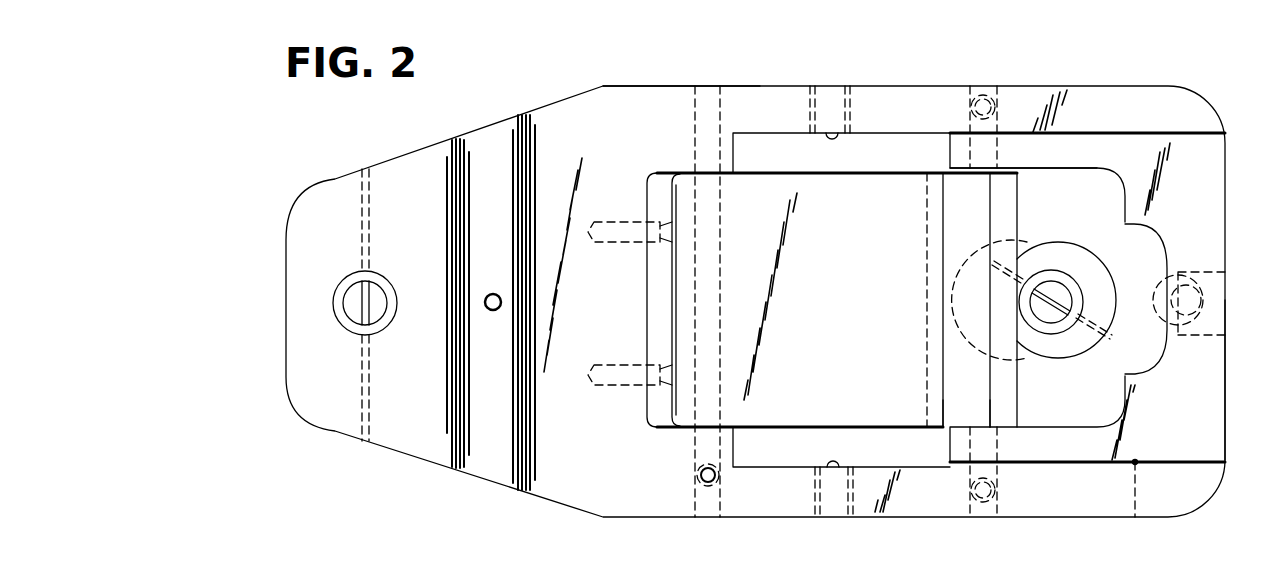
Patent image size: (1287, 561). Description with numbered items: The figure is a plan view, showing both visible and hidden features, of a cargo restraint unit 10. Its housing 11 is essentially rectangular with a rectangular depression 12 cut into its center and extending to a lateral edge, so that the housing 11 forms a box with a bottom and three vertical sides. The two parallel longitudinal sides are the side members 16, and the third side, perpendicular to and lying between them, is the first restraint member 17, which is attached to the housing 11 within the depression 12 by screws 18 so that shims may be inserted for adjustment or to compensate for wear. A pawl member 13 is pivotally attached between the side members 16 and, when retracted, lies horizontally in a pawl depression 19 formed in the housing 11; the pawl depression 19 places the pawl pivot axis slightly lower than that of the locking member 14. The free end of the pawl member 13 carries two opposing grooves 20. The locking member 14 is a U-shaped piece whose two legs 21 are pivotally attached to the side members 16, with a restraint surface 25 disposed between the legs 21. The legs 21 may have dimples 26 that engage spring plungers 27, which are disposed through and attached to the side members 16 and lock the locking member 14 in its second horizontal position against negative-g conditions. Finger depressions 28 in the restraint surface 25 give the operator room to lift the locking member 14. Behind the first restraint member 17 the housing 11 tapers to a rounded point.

The cargo restraint unit 10 is at (1025, 70).
The housing 11 is at (1167, 86).
The depression 12 is at (907, 143).
The pawl member 13 is at (800, 190).
The locking member 14 is at (1213, 195).
The side members 16 is at (752, 90).
The first restraint member 17 is at (665, 186).
The screws 18 is at (622, 222).
The pawl depression 19 is at (922, 175).
The grooves 20 is at (957, 410).
The legs 21 is at (1067, 145).
The restraint surface 25 is at (1226, 372).
The dimples 26 is at (1135, 508).
The spring plungers 27 is at (853, 103).
The finger depressions 28 is at (1140, 360).